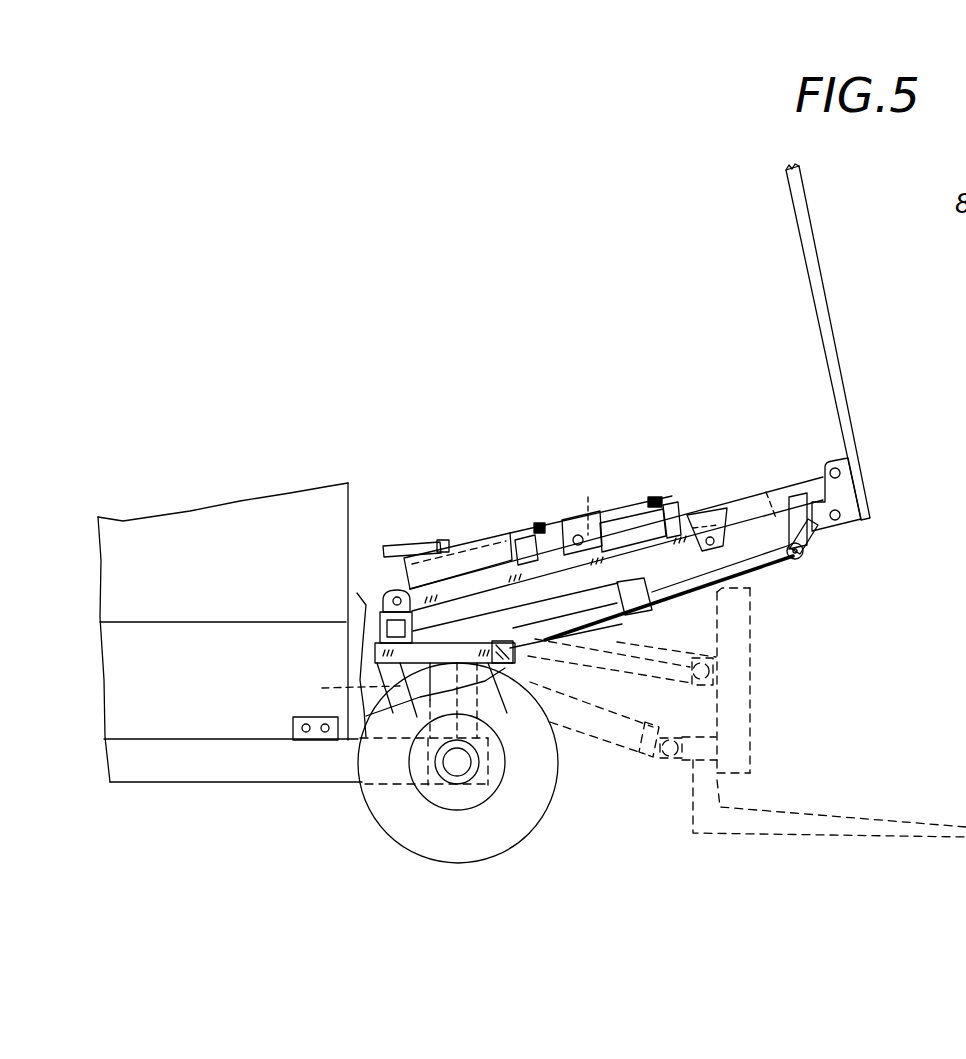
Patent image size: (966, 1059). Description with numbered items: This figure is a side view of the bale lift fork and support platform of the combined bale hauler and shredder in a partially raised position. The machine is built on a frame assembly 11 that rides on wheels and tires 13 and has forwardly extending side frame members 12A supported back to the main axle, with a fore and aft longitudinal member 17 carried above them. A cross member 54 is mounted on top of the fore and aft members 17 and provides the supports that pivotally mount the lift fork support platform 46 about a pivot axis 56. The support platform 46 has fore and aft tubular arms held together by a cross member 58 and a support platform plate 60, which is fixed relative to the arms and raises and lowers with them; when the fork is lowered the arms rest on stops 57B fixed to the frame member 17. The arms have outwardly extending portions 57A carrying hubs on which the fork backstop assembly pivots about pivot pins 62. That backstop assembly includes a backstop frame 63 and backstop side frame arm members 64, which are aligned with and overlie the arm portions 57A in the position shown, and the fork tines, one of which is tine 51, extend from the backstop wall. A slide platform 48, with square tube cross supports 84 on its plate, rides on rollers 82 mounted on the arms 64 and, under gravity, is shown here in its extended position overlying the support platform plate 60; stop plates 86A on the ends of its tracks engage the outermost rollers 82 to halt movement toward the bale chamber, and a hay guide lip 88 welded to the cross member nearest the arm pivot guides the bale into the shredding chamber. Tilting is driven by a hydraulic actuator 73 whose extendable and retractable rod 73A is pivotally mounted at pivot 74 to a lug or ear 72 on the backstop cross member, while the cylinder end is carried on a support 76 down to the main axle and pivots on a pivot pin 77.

The frame assembly 11 is at (286, 800).
The side frame members 12A is at (195, 747).
The wheels and tires 13 is at (522, 827).
The longitudinal member 17 is at (373, 652).
The lift fork support platform 46 is at (505, 597).
The slide platform 48 is at (515, 537).
The tine 51 is at (827, 305).
The cross member 54 is at (413, 630).
The pivot axis 56 is at (380, 593).
The outwardly extending arm portions 57A is at (617, 560).
The stops 57B is at (490, 648).
The cross member 58 is at (587, 485).
The support platform plate 60 is at (522, 535).
The pivot pins 62 is at (724, 546).
The backstop frame 63 is at (769, 458).
The backstop side frame arm members 64 is at (562, 527).
The lug or ear 72 is at (806, 536).
The hydraulic actuator 73 is at (627, 613).
The extendable and retractable rod 73A is at (756, 568).
The pivotal mounting 74 is at (802, 556).
The support 76 is at (478, 686).
The pivot pin 77 is at (345, 689).
The roller 82 is at (580, 527).
The square tube cross supports 84 is at (447, 540).
The stop plates 86A is at (677, 510).
The hay guide lip 88 is at (376, 545).